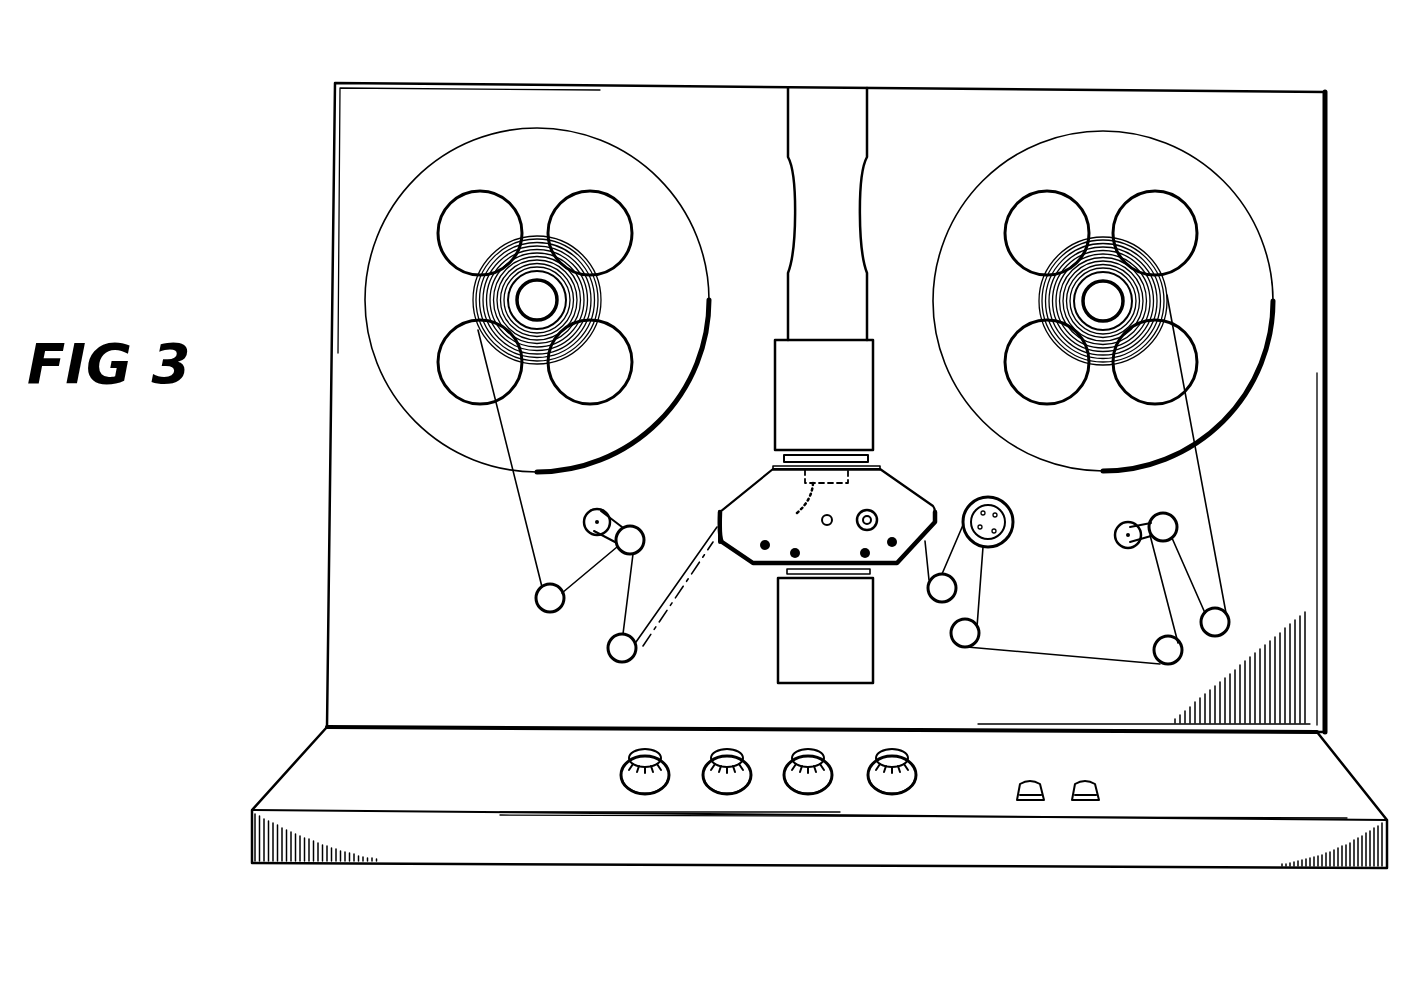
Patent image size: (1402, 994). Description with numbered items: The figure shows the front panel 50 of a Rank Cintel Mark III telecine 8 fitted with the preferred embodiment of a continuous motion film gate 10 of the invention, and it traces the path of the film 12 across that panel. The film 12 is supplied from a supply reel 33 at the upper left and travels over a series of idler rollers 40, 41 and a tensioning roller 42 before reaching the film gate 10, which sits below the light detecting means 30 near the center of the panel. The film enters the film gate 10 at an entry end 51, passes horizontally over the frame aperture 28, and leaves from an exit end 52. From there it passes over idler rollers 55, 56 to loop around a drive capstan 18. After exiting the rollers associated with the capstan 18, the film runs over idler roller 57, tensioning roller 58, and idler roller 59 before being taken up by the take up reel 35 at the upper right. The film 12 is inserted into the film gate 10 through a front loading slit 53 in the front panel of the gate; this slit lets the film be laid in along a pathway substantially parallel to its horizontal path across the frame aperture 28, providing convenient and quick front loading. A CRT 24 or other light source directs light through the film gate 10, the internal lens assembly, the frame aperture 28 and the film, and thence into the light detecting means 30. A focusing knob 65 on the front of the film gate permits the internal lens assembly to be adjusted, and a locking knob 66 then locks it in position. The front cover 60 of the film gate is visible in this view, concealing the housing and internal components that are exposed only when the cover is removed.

The telecine 8 is at (920, 87).
The continuous motion film gate 10 is at (930, 482).
The film 12 is at (707, 538).
The drive capstan 18 is at (1015, 512).
The CRT 24 is at (872, 660).
The frame aperture 28 is at (808, 502).
The light detecting means 30 is at (873, 405).
The supply reel 33 is at (615, 152).
The take up reel 35 is at (1010, 167).
The idler roller 40 is at (550, 612).
The idler roller 41 is at (625, 663).
The tensioning roller 42 is at (622, 557).
The front panel 50 is at (327, 625).
The entry end 51 is at (733, 520).
The exit end 52 is at (932, 511).
The front loading slit 53 is at (777, 470).
The idler roller 55 is at (941, 603).
The idler roller 56 is at (980, 620).
The idler roller 57 is at (1162, 640).
The tensioning roller 58 is at (1165, 512).
The idler roller 59 is at (1228, 613).
The front cover 60 is at (773, 566).
The focusing knob 65 is at (872, 532).
The locking knob 66 is at (830, 525).